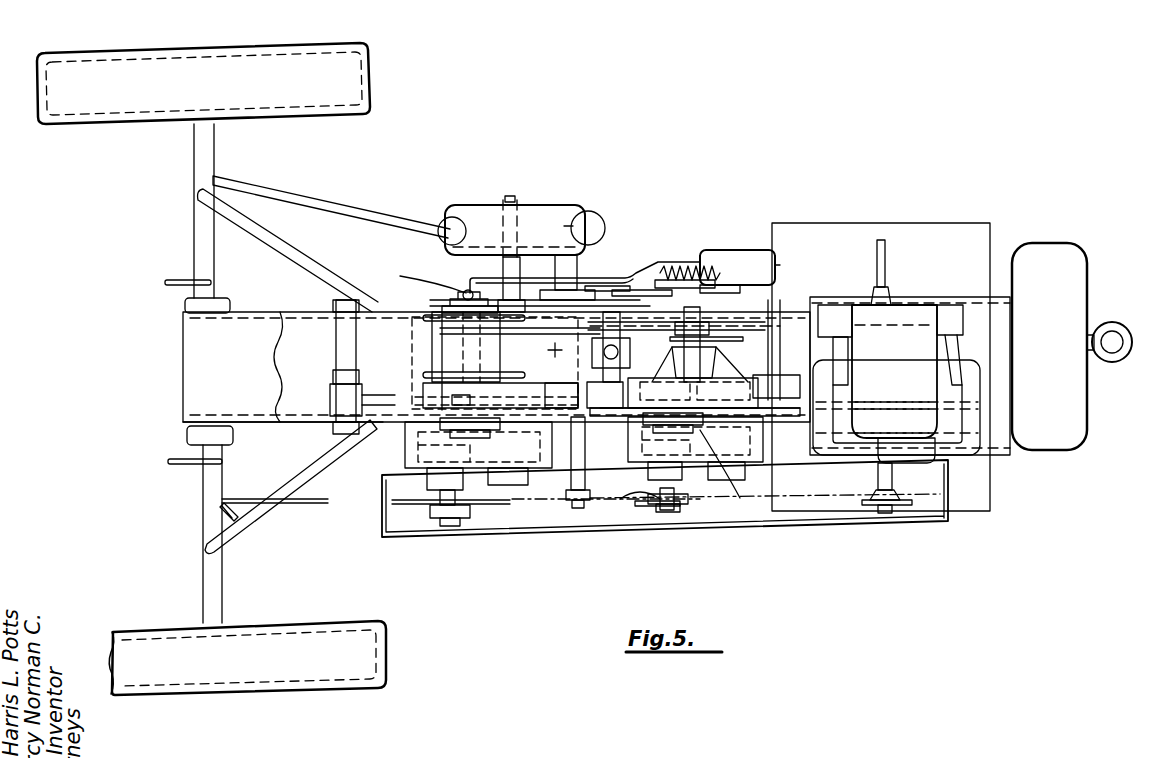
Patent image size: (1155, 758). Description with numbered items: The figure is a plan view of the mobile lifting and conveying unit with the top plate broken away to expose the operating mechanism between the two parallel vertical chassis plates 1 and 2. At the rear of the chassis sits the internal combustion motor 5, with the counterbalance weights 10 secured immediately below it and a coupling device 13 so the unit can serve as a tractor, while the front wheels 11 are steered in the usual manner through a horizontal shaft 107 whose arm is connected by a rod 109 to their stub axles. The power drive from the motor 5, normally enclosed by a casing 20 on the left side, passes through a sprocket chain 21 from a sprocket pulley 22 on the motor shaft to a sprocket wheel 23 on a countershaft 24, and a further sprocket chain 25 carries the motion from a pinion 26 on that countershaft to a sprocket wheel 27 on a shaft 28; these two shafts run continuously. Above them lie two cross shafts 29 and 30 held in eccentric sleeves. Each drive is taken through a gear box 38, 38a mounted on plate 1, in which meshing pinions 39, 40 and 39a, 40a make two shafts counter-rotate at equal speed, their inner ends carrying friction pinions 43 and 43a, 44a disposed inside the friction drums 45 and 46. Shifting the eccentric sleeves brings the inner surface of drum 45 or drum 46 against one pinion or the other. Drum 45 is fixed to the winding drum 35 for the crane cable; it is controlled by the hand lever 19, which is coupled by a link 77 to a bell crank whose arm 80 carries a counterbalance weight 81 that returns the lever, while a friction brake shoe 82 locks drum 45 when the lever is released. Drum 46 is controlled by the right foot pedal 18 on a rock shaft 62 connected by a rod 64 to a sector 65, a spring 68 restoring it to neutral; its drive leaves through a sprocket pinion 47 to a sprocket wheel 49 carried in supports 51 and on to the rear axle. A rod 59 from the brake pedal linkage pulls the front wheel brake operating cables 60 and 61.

The vertical plate 1 is at (318, 420).
The vertical plate 2 is at (315, 310).
The internal combustion motor 5 is at (896, 351).
The counterbalance weights 10 is at (1046, 435).
The front wheels 11 is at (345, 75).
The coupling device 13 is at (1112, 362).
The right foot pedal 18 is at (555, 218).
The hand operated control lever 19 is at (348, 251).
The casing 20 is at (800, 540).
The sprocket chain 21 is at (830, 536).
The sprocket pulley 22 is at (896, 506).
The sprocket wheel 23 is at (690, 510).
The countershaft 24 is at (668, 510).
The sprocket chain 25 is at (548, 503).
The pinion 26 is at (630, 505).
The sprocket wheel 27 is at (480, 508).
The shaft 28 is at (445, 526).
The cross shaft 29 is at (440, 470).
The cross shaft 30 is at (740, 503).
The winding drum 35 is at (495, 342).
The gear box 38 is at (418, 438).
The gear box 38a is at (752, 446).
The pinion 39 is at (405, 462).
The pinion 39a is at (630, 500).
The pinion 40 is at (540, 450).
The pinion 40a is at (703, 437).
The friction pinion 43 is at (472, 400).
The friction pinion 43a is at (626, 478).
The friction pinion 44a is at (722, 482).
The friction drum 45 is at (548, 395).
The friction drum 46 is at (752, 392).
The sprocket pinion 47 is at (700, 345).
The sprocket wheel 49 is at (640, 370).
The supports 51 is at (742, 332).
The rod 59 is at (300, 508).
The front wheel brake operating cable 60 is at (222, 472).
The front wheel brake operating cable 61 is at (222, 580).
The rock shaft 62 is at (510, 196).
The rod 64 is at (578, 306).
The sector 65 is at (690, 264).
The spring 68 is at (707, 266).
The link 77 is at (606, 286).
The bell crank arm 80 is at (668, 282).
The counterbalance weight 81 is at (738, 255).
The friction brake shoe 82 is at (381, 392).
The horizontal shaft 107 is at (568, 268).
The rod 109 is at (388, 197).